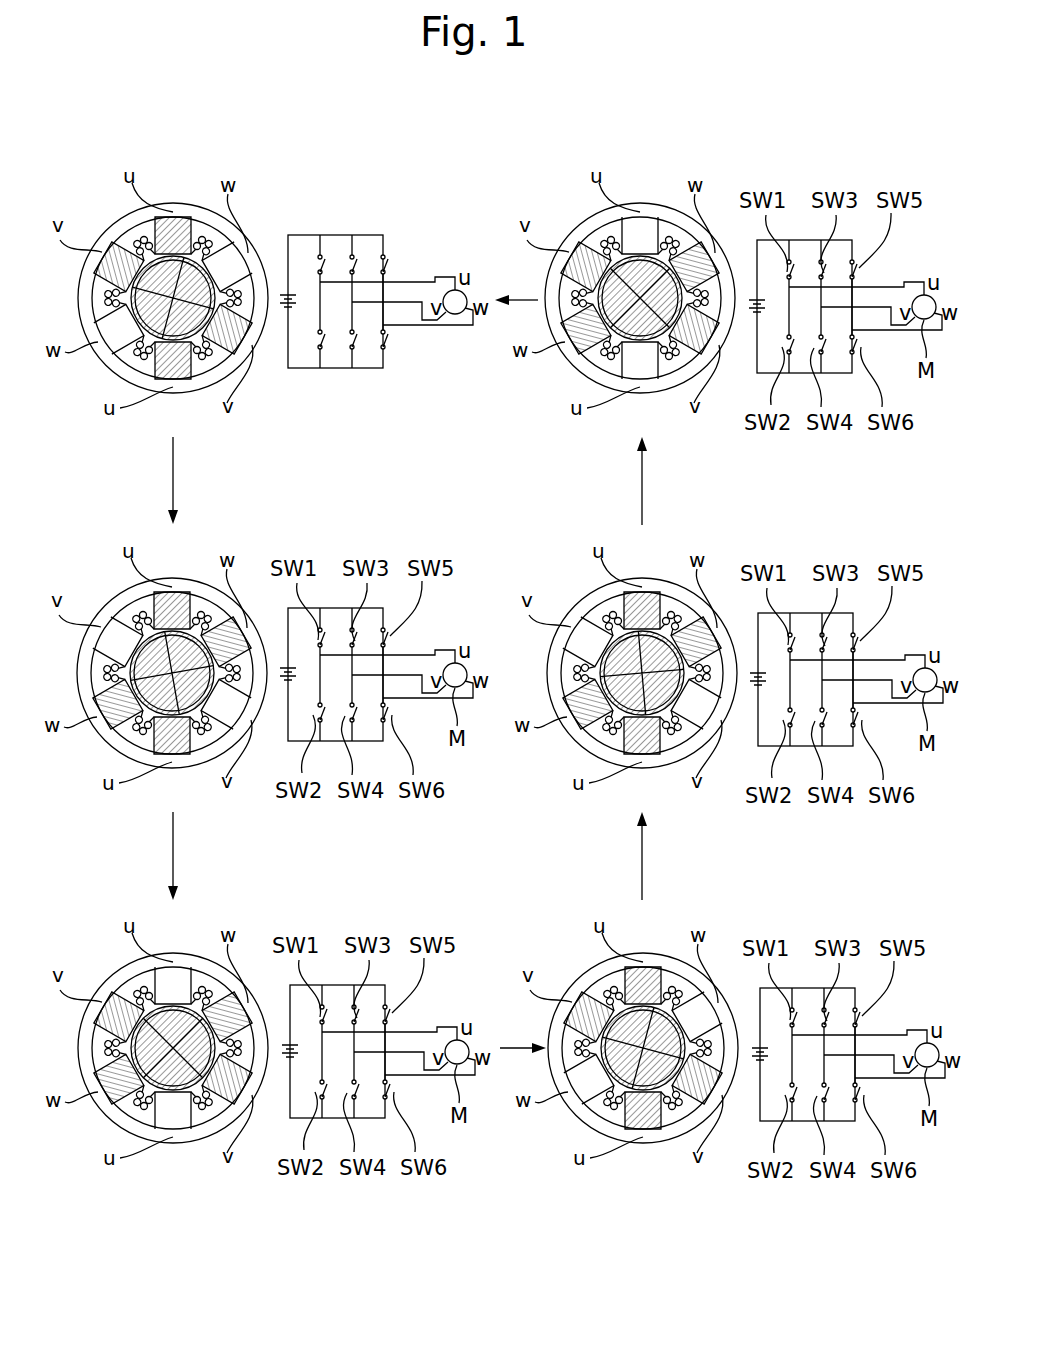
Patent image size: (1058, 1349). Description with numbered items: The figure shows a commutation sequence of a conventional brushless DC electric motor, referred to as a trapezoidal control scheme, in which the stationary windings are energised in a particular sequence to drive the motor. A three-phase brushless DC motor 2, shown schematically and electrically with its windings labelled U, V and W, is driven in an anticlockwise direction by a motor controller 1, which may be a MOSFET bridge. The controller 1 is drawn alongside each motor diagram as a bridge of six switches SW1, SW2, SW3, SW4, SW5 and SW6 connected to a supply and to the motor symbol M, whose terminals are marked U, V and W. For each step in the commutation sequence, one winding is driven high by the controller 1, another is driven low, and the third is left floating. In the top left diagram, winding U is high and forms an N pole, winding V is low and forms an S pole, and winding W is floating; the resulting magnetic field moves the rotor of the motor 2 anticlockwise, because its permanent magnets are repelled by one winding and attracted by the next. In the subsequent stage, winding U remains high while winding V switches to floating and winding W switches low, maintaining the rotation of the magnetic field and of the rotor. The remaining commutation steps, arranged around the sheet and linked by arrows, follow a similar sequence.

The motor controller 1 is at (330, 192).
The three-phase brushless DC motor 2 is at (175, 158).
The switch SW1 is at (297, 229).
The switch SW2 is at (300, 380).
The switch SW3 is at (365, 229).
The switch SW4 is at (360, 380).
The switch SW5 is at (417, 229).
The switch SW6 is at (413, 380).
The motor symbol M is at (455, 334).